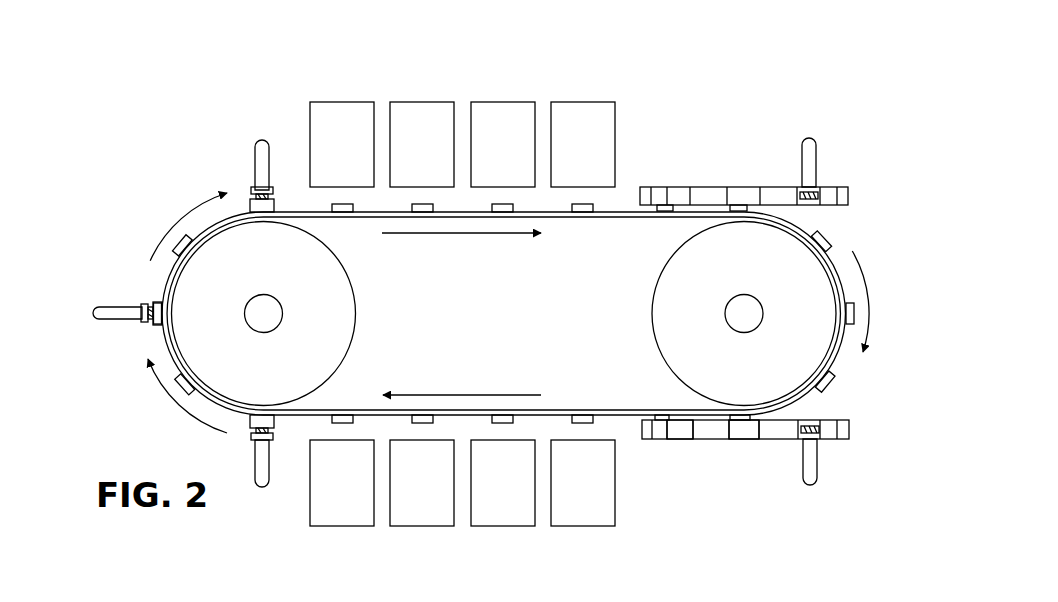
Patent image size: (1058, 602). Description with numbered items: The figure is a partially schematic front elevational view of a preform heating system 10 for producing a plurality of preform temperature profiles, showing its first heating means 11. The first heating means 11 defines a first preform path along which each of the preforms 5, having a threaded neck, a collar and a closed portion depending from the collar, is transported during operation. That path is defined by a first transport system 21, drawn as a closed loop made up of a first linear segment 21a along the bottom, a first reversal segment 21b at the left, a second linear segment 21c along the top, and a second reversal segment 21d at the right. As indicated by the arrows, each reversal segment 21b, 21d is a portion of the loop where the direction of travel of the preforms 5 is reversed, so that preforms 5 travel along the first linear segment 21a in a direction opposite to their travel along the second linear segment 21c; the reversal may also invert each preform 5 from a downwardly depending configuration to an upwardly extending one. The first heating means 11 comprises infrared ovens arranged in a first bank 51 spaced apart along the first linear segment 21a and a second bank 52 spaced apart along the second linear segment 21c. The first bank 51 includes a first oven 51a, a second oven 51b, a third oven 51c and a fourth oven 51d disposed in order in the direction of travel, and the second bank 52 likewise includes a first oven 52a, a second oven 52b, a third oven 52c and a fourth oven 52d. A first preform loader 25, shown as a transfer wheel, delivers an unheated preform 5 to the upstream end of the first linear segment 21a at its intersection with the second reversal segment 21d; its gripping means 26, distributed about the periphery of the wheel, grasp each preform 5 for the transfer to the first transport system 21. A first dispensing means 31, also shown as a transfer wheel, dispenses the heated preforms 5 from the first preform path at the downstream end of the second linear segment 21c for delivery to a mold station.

The preform heating system 10 is at (164, 86).
The first heating means 11 is at (153, 199).
The preform 5 is at (96, 306).
The first transport system 21 is at (347, 218).
The first linear segment 21a is at (607, 403).
The first reversal segment 21b is at (143, 346).
The second linear segment 21c is at (607, 222).
The second reversal segment 21d is at (846, 371).
The first preform loader 25 is at (862, 452).
The gripping means 26 is at (678, 432).
The first dispensing means 31 is at (857, 178).
The first bank of ovens 51 is at (462, 512).
The first oven 51a is at (583, 483).
The second oven 51b is at (485, 495).
The third oven 51c is at (404, 495).
The fourth oven 51d is at (324, 495).
The second bank of ovens 52 is at (462, 116).
The first oven 52a is at (324, 157).
The second oven 52b is at (404, 157).
The third oven 52c is at (485, 157).
The fourth oven 52d is at (583, 144).